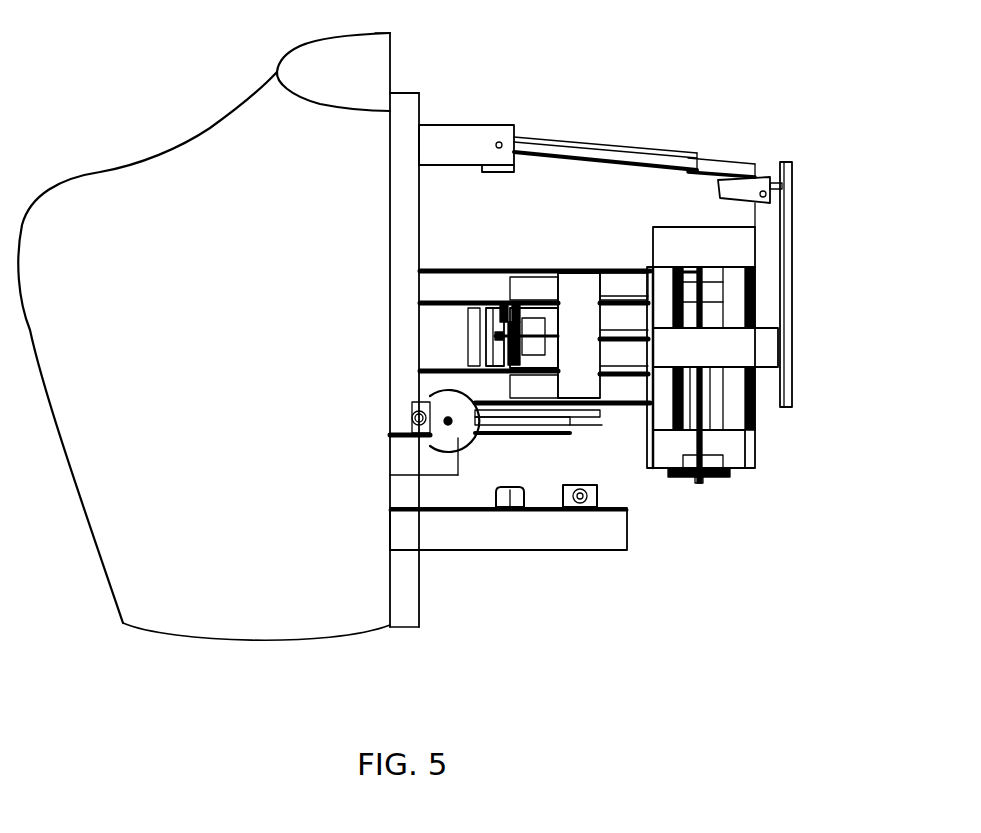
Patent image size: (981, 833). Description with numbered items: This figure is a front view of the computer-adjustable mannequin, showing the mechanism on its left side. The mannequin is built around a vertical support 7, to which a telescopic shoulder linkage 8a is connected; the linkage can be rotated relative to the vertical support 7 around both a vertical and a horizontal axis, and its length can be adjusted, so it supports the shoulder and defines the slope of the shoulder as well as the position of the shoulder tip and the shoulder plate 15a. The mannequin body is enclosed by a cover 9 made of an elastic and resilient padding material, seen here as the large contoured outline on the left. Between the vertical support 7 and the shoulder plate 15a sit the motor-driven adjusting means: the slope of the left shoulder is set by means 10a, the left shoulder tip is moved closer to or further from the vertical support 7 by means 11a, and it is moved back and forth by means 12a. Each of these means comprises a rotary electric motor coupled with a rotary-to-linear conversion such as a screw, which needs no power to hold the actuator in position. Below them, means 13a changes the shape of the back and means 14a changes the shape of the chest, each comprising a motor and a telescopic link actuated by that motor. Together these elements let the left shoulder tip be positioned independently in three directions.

The vertical support 7 is at (413, 110).
The shoulder linkage 8a is at (582, 137).
The cover 9 is at (202, 563).
The means for adjusting the slope of the left shoulder 10a is at (715, 387).
The means for moving the left shoulder tip closer to or further from the vertical su 11a is at (550, 322).
The means for moving the left shoulder tip back and forth 12a is at (497, 417).
The means for changing the shape of back 13a is at (613, 513).
The means for changing the shape of chest 14a is at (513, 513).
The shoulder plate 15a is at (783, 158).